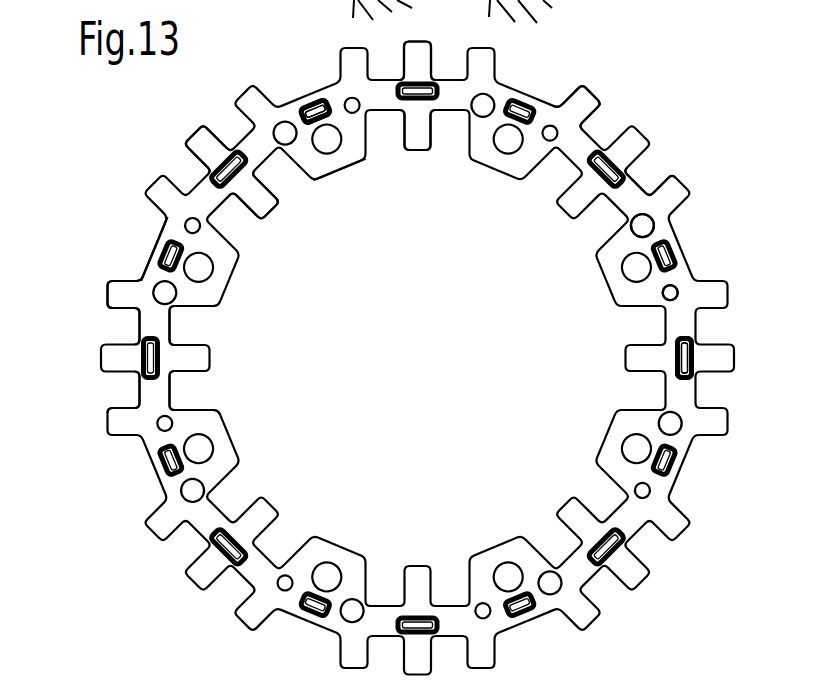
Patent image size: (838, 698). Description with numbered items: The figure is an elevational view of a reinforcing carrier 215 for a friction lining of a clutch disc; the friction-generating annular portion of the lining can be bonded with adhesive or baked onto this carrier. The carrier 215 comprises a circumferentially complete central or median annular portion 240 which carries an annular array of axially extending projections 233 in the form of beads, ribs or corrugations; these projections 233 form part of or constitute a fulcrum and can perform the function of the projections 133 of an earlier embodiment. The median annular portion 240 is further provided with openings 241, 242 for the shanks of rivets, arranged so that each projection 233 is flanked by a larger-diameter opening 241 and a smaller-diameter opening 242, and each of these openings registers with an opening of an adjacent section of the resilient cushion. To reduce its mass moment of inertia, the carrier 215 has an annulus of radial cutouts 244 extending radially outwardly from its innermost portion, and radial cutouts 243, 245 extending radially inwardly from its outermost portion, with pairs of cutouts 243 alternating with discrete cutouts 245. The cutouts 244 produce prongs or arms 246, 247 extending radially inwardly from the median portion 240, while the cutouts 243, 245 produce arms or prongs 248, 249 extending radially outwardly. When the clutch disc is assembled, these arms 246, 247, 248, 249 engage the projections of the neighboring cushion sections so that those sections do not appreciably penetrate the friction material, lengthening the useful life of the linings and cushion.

The projection 133 is at (305, 102).
The reinforcing carrier 215 is at (577, 135).
The projection 233 is at (695, 342).
The median annular portion 240 is at (630, 185).
The opening 241 is at (647, 223).
The opening 242 is at (673, 287).
The radial cutout 243 is at (112, 323).
The radial cutout 244 is at (199, 331).
The radial cutout 245 is at (147, 242).
The arm 246 is at (352, 148).
The arm 247 is at (423, 140).
The arm 248 is at (125, 295).
The arm 249 is at (418, 57).